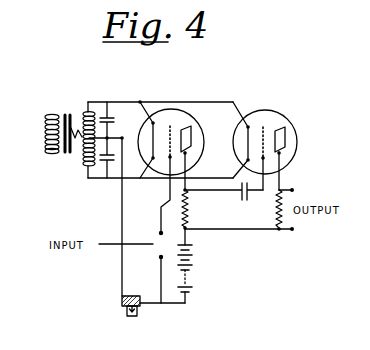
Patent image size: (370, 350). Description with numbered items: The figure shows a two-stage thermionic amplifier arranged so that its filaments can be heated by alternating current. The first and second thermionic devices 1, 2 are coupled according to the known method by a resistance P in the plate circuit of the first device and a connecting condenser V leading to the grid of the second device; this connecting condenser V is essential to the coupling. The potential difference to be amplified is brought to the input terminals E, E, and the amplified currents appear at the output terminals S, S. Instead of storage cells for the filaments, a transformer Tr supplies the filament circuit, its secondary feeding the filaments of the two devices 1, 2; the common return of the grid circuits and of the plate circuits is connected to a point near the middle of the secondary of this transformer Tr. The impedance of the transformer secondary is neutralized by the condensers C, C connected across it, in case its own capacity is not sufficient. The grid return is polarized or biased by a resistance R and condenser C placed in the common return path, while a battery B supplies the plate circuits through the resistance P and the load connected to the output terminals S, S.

The transformer Tr is at (70, 137).
The condenser C is at (118, 220).
The thermionic device 1 is at (171, 157).
The thermionic device 2 is at (265, 139).
The resistance P is at (192, 216).
The connecting condenser V is at (224, 204).
The battery B is at (193, 274).
The output terminals S is at (246, 211).
The input terminals E is at (151, 264).
The resistance R is at (131, 293).